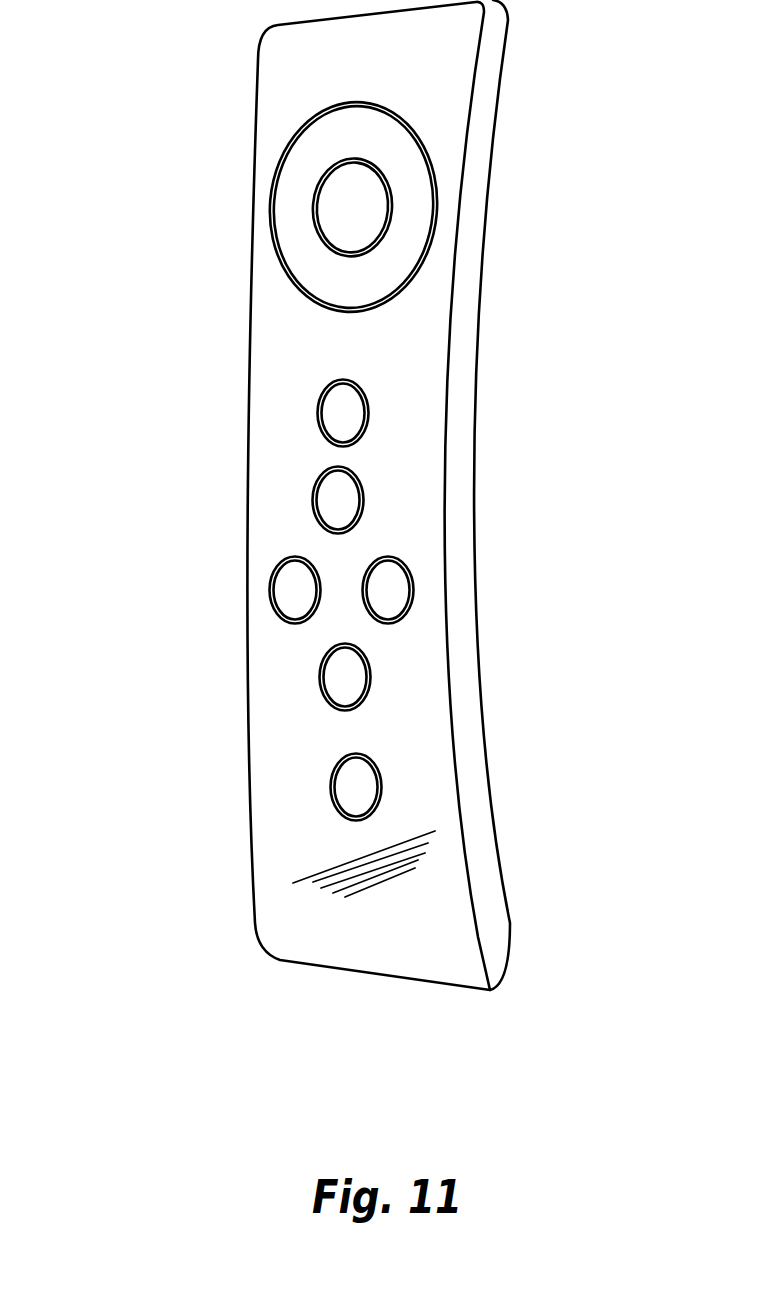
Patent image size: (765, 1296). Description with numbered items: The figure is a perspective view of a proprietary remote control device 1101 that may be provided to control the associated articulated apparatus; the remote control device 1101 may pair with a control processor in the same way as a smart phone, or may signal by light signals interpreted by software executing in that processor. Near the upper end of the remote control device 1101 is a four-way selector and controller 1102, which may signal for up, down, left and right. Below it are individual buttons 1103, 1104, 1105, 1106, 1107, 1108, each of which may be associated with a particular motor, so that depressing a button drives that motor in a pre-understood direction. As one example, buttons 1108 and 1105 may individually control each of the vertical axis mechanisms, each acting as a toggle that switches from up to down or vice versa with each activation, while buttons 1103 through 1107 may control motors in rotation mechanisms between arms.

The remote control device 1101 is at (150, 299).
The four-way selector and controller 1102 is at (404, 144).
The button 1103 is at (347, 413).
The button 1104 is at (340, 510).
The button 1105 is at (395, 590).
The button 1106 is at (352, 682).
The button 1107 is at (357, 790).
The button 1108 is at (295, 590).